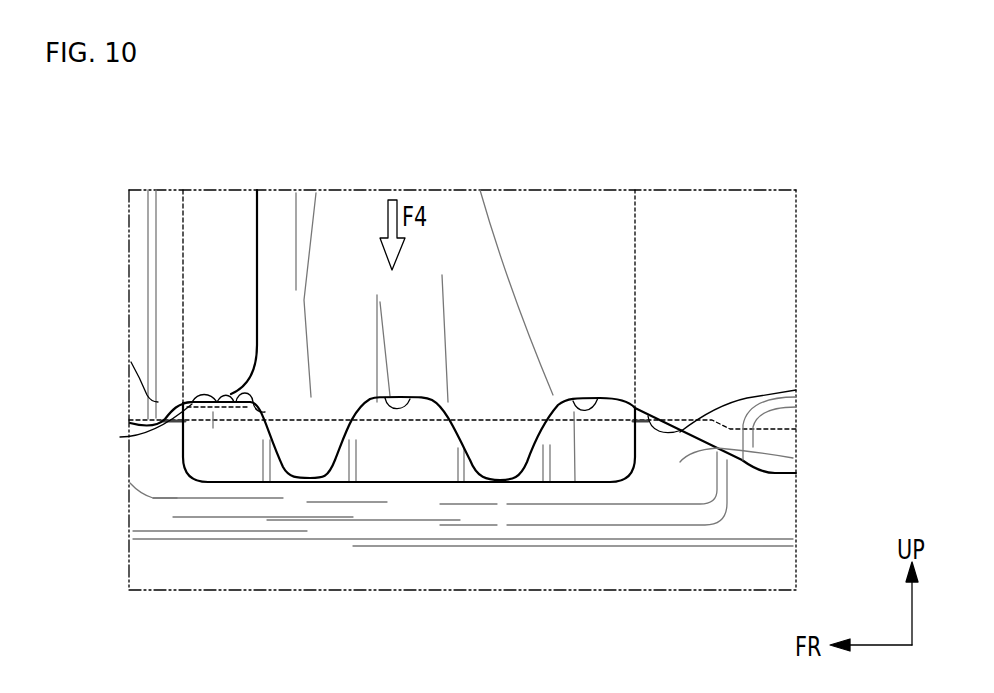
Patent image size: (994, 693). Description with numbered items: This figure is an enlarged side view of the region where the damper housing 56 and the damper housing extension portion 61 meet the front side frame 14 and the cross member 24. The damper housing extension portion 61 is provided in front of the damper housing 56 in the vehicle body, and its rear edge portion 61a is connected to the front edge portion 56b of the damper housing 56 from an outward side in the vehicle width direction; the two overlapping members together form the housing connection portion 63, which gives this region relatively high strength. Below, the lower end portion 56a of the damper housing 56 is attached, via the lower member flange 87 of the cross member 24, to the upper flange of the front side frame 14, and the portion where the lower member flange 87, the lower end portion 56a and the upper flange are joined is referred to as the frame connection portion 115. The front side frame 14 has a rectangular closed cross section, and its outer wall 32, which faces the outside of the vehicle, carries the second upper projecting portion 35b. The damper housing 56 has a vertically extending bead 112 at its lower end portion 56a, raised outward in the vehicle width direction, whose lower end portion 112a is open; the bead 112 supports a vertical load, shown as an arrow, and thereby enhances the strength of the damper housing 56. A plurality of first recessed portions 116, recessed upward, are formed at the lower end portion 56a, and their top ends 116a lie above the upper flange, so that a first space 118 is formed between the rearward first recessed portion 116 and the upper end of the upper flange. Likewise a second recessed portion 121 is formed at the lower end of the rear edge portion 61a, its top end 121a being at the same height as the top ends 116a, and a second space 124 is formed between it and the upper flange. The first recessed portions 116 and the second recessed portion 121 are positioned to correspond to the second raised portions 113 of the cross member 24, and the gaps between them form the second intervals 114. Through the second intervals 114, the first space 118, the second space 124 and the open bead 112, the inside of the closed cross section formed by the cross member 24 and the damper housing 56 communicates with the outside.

The front side frame 14 is at (420, 391).
The cross member 24 is at (663, 290).
The outer wall 32 is at (242, 616).
The second upper projecting portion 35b is at (744, 457).
The damper housing 56 is at (520, 265).
The lower end portion 56a is at (428, 460).
The front edge portion 56b is at (289, 272).
The damper housing extension portion 61 is at (108, 304).
The rear edge portion 61a is at (189, 269).
The housing connection portion 63 is at (250, 251).
The lower member flange 87 is at (463, 550).
The bead 112 is at (434, 330).
The lower end portion of the bead 112a is at (458, 365).
The second raised portions 113 is at (364, 523).
The second intervals 114 is at (407, 451).
The frame connection portion 115 is at (547, 386).
The first recessed portions 116 is at (423, 492).
The top ends 116a is at (470, 358).
The first space 118 is at (766, 416).
The second recessed portion 121 is at (119, 460).
The top end 121a is at (138, 347).
The second space 124 is at (126, 425).